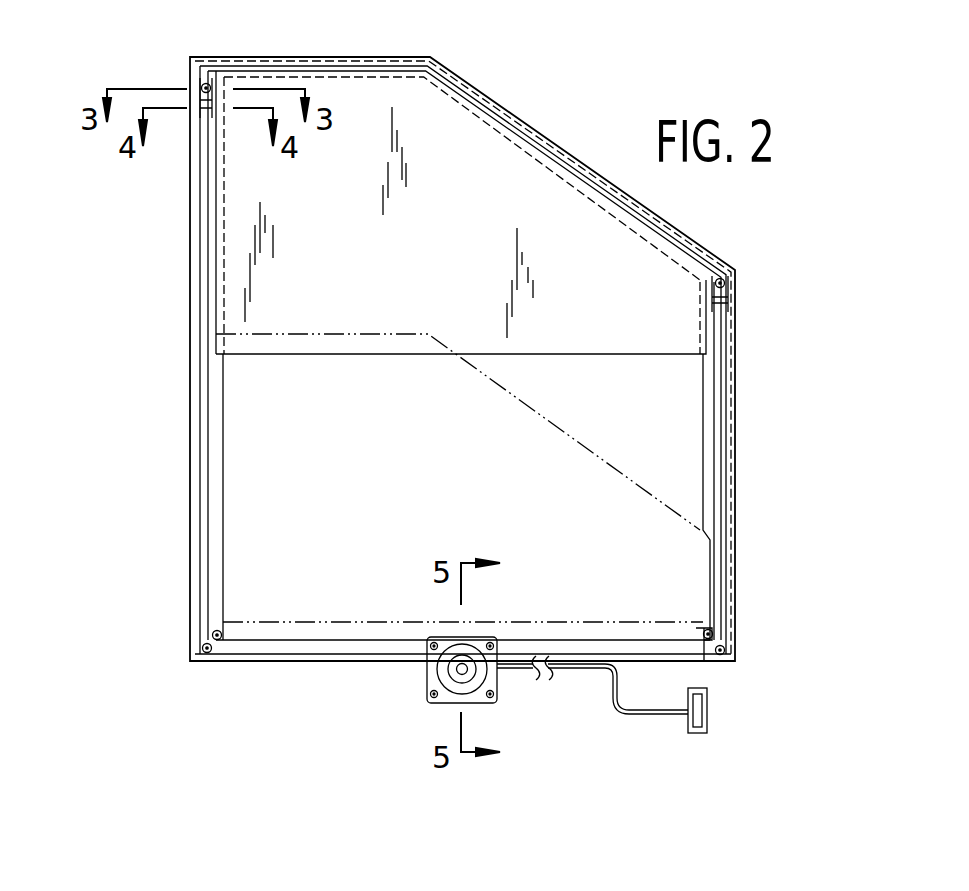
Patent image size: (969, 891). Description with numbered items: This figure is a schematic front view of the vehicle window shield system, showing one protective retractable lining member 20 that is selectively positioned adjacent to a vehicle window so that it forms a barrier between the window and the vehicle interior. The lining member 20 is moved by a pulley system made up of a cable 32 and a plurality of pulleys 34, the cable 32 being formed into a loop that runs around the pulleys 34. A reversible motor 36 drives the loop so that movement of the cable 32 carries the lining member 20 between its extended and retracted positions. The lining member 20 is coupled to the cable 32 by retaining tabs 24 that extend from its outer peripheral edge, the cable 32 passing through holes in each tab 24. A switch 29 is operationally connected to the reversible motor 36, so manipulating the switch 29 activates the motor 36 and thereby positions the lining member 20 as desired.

The protective retractable lining member 20 is at (467, 145).
The retaining tab 24 is at (204, 86).
The switch 29 is at (708, 706).
The cable 32 is at (338, 661).
The pulley 34 is at (728, 271).
The reversible motor 36 is at (492, 680).